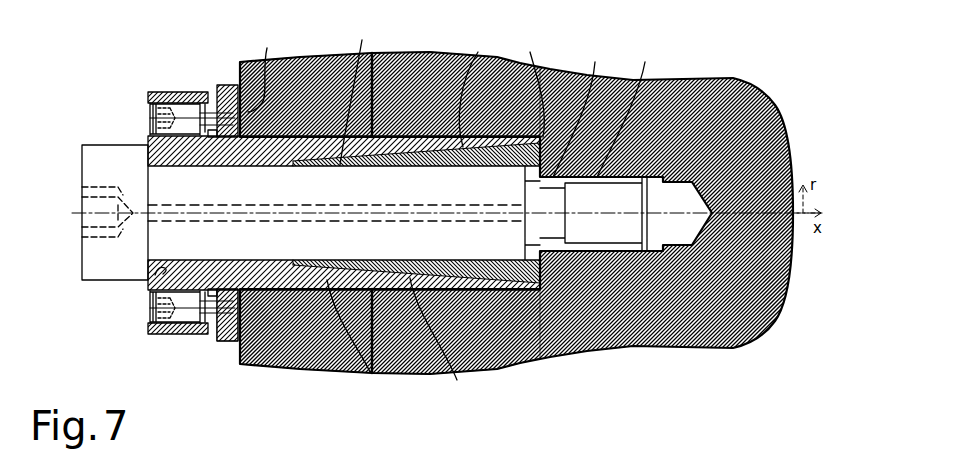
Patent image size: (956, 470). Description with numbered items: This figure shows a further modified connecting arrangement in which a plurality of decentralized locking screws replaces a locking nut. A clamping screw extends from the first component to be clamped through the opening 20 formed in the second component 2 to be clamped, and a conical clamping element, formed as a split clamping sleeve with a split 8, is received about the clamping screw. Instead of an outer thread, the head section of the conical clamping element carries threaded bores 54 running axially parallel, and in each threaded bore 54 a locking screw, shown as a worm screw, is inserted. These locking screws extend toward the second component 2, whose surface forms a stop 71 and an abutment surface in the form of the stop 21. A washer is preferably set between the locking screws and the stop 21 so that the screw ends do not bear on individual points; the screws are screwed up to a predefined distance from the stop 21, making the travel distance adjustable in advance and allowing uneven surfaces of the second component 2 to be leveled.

The second component 2 is at (240, 363).
The stop 21 is at (240, 78).
The stop 71 is at (267, 70).
The opening 20 is at (372, 373).
The split 8 is at (430, 205).
The threaded bores 54 is at (147, 108).